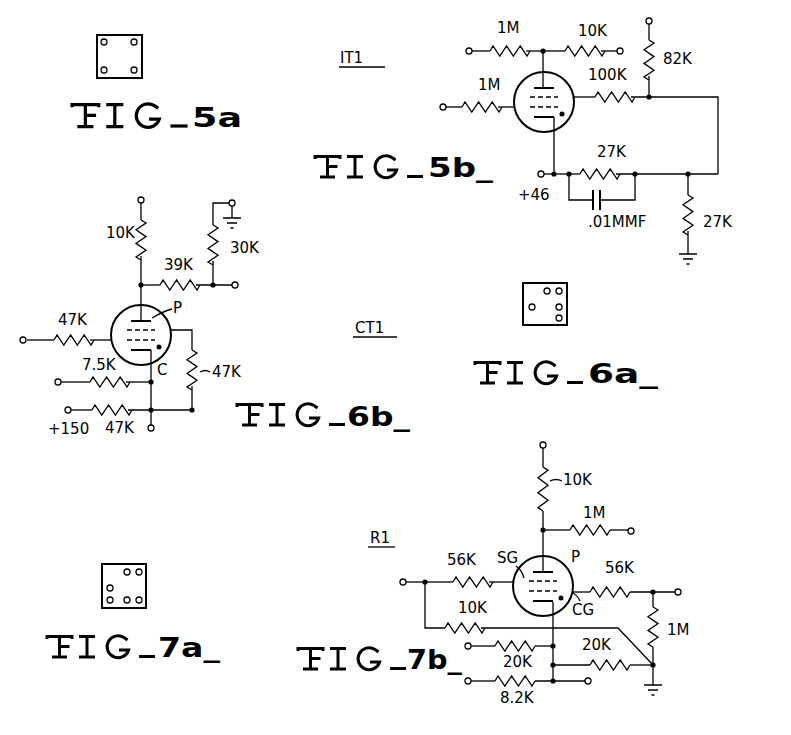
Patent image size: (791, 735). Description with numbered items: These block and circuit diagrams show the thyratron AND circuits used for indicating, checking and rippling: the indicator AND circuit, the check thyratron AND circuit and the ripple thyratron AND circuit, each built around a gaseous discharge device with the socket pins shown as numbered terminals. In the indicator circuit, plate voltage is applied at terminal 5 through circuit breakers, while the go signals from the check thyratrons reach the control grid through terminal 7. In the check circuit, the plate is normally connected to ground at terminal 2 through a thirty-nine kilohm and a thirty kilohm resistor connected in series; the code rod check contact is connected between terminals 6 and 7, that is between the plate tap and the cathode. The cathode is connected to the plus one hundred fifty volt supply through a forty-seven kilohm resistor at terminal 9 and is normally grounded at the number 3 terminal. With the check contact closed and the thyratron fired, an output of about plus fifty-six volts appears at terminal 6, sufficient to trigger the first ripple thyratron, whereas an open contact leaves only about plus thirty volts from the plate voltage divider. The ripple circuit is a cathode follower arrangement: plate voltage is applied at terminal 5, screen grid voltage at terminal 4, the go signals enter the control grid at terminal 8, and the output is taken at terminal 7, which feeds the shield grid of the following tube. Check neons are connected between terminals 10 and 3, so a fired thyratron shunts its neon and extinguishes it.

In FIG. 6B, the ground terminal 2 is at (234, 200).
In FIG. 7B, the ground terminal 2 is at (656, 665).
In FIG. 5B, the cathode ground terminal 3 is at (537, 174).
In FIG. 6B, the cathode ground terminal 3 is at (55, 382).
In FIG. 6A, the cathode ground terminal 3 is at (558, 321).
In FIG. 7A, the cathode ground terminal 3 is at (127, 603).
In FIG. 7B, the cathode ground terminal 3 is at (590, 684).
In FIG. 5A, the screen grid voltage terminal 4 is at (101, 42).
In FIG. 5B, the screen grid voltage terminal 4 is at (656, 17).
In FIG. 7A, the screen grid voltage terminal 4 is at (107, 588).
In FIG. 7B, the screen grid voltage terminal 4 is at (400, 581).
In FIG. 5A, the plate voltage terminal 5 is at (137, 42).
In FIG. 5B, the plate voltage terminal 5 is at (622, 40).
In FIG. 6B, the plate voltage terminal 5 is at (141, 197).
In FIG. 6A, the plate voltage terminal 5 is at (547, 288).
In FIG. 7A, the plate voltage terminal 5 is at (127, 569).
In FIG. 7B, the plate voltage terminal 5 is at (543, 442).
In FIG. 5B, the plate tap output terminal 6 is at (543, 48).
In FIG. 6B, the plate tap output terminal 6 is at (238, 283).
In FIG. 6A, the plate tap output terminal 6 is at (559, 288).
In FIG. 5A, the cathode output terminal 7 is at (101, 70).
In FIG. 5B, the cathode output terminal 7 is at (440, 107).
In FIG. 6B, the cathode output terminal 7 is at (153, 431).
In FIG. 6A, the cathode output terminal 7 is at (562, 307).
In FIG. 7A, the cathode output terminal 7 is at (142, 600).
In FIG. 7B, the cathode output terminal 7 is at (467, 679).
In FIG. 6B, the control grid terminal 8 is at (20, 337).
In FIG. 6A, the control grid terminal 8 is at (529, 307).
In FIG. 7A, the control grid terminal 8 is at (107, 600).
In FIG. 7B, the control grid terminal 8 is at (685, 585).
In FIG. 6B, the cathode resistor terminal 9 is at (65, 409).
In FIG. 7B, the cathode resistor terminal 9 is at (467, 643).
In FIG. 5A, the check neon terminal 10 is at (137, 70).
In FIG. 5B, the check neon terminal 10 is at (466, 51).
In FIG. 7A, the check neon terminal 10 is at (142, 572).
In FIG. 7B, the check neon terminal 10 is at (634, 530).